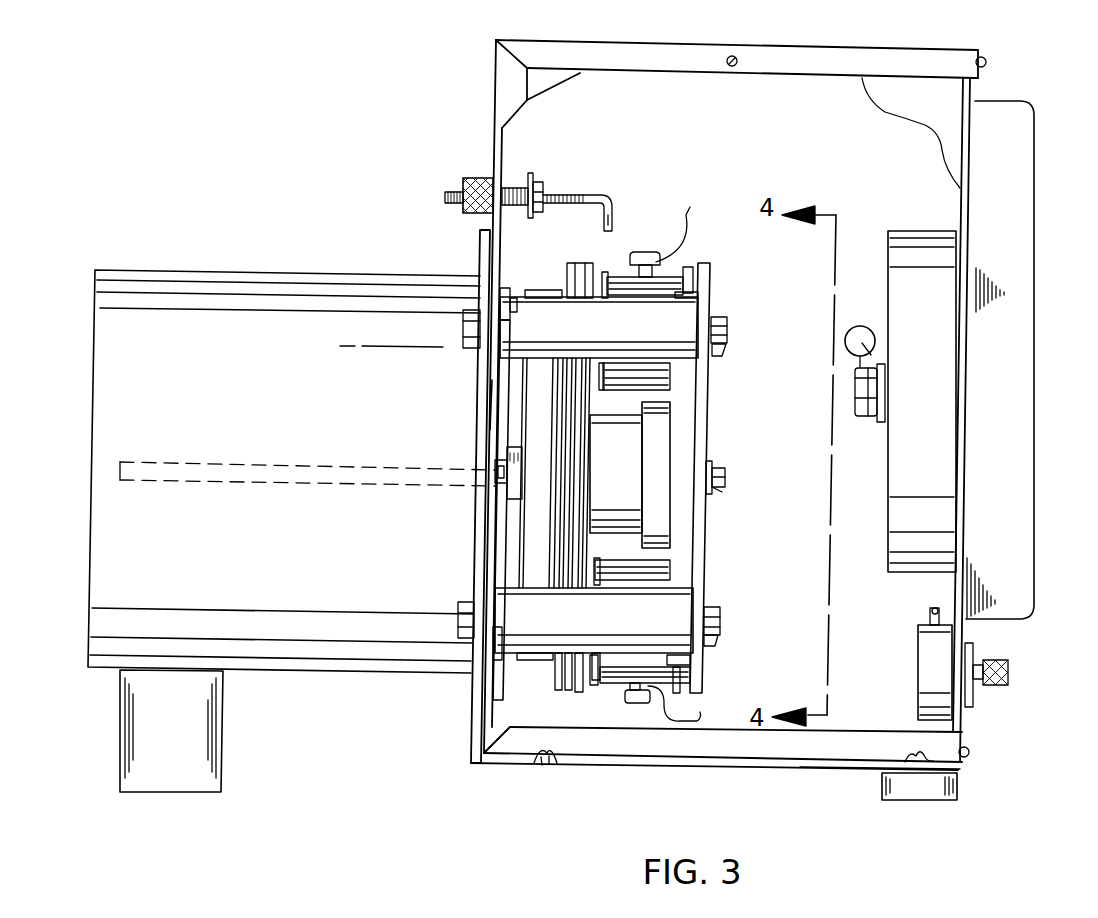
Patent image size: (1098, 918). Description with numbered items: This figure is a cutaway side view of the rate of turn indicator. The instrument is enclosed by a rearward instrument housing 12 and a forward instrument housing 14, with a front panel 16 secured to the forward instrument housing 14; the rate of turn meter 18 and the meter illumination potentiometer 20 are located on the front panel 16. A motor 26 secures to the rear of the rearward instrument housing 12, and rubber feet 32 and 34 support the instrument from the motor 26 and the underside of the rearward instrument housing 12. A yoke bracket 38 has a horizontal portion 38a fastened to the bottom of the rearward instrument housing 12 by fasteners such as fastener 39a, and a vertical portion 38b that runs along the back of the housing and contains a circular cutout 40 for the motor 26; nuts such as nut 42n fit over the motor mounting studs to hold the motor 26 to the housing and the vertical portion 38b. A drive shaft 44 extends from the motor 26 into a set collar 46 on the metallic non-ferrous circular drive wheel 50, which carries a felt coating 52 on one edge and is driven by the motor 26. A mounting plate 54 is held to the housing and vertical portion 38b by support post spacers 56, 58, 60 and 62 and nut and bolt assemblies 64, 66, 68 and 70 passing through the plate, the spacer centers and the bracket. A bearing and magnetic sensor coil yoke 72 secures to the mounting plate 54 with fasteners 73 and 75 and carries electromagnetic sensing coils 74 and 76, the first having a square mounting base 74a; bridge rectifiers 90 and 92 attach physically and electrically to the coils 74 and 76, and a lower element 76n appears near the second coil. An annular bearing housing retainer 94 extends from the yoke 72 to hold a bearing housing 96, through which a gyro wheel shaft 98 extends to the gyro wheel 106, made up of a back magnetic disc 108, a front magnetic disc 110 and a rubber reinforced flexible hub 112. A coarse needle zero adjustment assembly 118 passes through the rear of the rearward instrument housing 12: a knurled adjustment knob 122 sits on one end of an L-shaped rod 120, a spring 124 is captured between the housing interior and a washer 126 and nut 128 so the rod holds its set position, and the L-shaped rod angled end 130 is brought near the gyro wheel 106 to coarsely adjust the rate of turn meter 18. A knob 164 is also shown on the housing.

The rearward instrument housing 12 is at (748, 48).
The forward instrument housing 14 is at (897, 90).
The front panel 16 is at (978, 92).
The rate of turn meter 18 is at (1012, 297).
The meter illumination potentiometer 20 is at (926, 657).
The motor 26 is at (196, 300).
The rubber foot 32 is at (200, 767).
The rubber foot 34 is at (938, 787).
The yoke bracket 38 is at (488, 377).
The horizontal portion of yoke bracket 38a is at (833, 768).
The vertical portion of yoke bracket 38b is at (491, 401).
The fastener 39a is at (546, 757).
The circular cutout 40 is at (481, 679).
The nut 42n is at (505, 633).
The drive shaft 44 is at (309, 470).
The set collar 46 is at (507, 490).
The circular drive wheel 50 is at (558, 297).
The felt coating 52 is at (560, 292).
The mounting plate 54 is at (712, 270).
The support post spacer 56 is at (687, 310).
The support post spacer 58 is at (680, 328).
The support post spacer 60 is at (664, 602).
The support post spacer 62 is at (676, 613).
The nut and bolt assembly 64 is at (724, 343).
The nut and bolt assembly 66 is at (727, 351).
The nut and bolt assembly 68 is at (722, 622).
The nut and bolt assembly 70 is at (722, 632).
The bearing and magnetic sensor coil yoke 72 is at (685, 402).
The fastener 73 is at (716, 462).
The electromagnetic sensing coil 74 is at (628, 280).
The square mounting base 74a is at (684, 274).
The fastener 75 is at (724, 491).
The electromagnetic sensing coil 76 is at (610, 665).
The rail nut 76n is at (690, 681).
The bridge rectifier 90 is at (645, 256).
The bridge rectifier 92 is at (650, 702).
The annular bearing housing retainer 94 is at (625, 502).
The bearing housing 96 is at (660, 500).
The gyro wheel shaft 98 is at (727, 478).
The gyro wheel 106 is at (570, 712).
The back magnetic disc 108 is at (561, 690).
The front magnetic disc 110 is at (576, 693).
The rubber reinforced flexible hub 112 is at (567, 690).
The coarse needle zero adjustment assembly 118 is at (512, 159).
The L-shaped rod 120 is at (593, 193).
The knurled adjustment knob 122 is at (468, 178).
The spring 124 is at (512, 188).
The washer 126 is at (531, 177).
The nut 128 is at (540, 185).
The L-shaped rod angled end 130 is at (615, 208).
The knob 164 is at (860, 326).